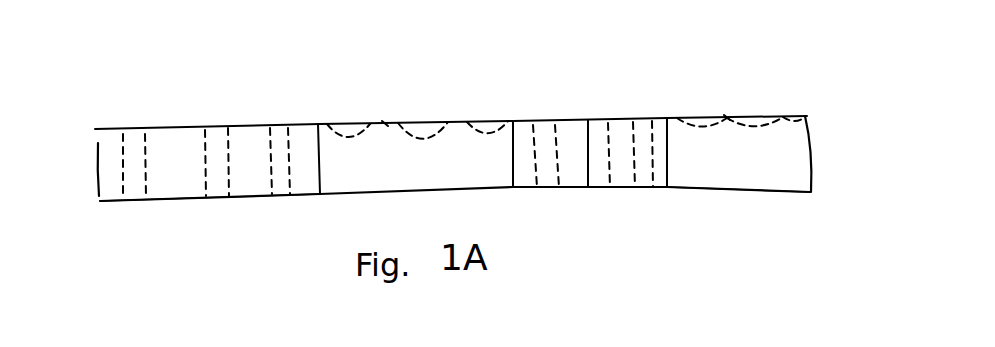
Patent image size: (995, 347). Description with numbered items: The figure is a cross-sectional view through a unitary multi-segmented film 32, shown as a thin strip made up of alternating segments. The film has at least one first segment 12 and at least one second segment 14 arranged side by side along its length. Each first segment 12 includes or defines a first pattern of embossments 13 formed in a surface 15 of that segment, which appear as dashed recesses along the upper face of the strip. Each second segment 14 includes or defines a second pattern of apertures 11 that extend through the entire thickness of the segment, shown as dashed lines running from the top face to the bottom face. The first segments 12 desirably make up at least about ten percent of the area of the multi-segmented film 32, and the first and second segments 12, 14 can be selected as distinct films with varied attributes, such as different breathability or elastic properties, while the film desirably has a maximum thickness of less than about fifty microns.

The apertures 11 is at (147, 157).
The first segment 12 is at (352, 199).
The embossments 13 is at (340, 137).
The second segment 14 is at (180, 198).
The surface 15 is at (385, 123).
The multi-segmented film 32 is at (724, 204).